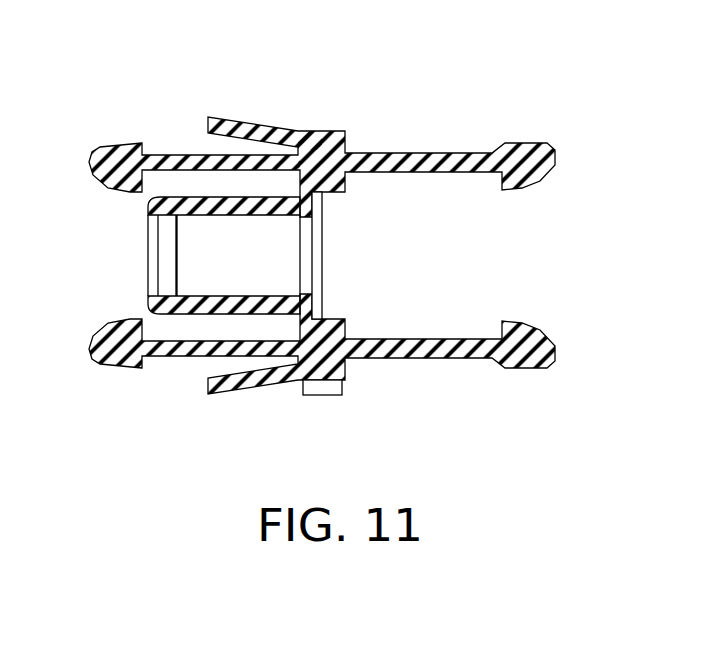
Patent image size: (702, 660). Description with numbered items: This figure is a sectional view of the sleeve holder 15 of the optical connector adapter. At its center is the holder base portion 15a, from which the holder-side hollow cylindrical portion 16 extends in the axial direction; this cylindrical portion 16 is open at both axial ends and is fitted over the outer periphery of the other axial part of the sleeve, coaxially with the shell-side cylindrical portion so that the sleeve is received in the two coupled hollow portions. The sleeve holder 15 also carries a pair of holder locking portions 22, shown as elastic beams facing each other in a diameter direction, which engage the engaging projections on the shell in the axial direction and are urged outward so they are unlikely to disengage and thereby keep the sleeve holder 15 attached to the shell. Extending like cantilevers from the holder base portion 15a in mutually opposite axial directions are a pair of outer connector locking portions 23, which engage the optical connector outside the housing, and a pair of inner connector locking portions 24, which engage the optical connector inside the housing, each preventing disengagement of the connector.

The sleeve holder 15 is at (332, 126).
The holder base portion 15a is at (312, 143).
The holder-side hollow cylindrical portion 16 is at (213, 200).
The holder locking portions 22 is at (258, 122).
The outer connector locking portions 23 is at (473, 162).
The inner connector locking portions 24 is at (168, 152).